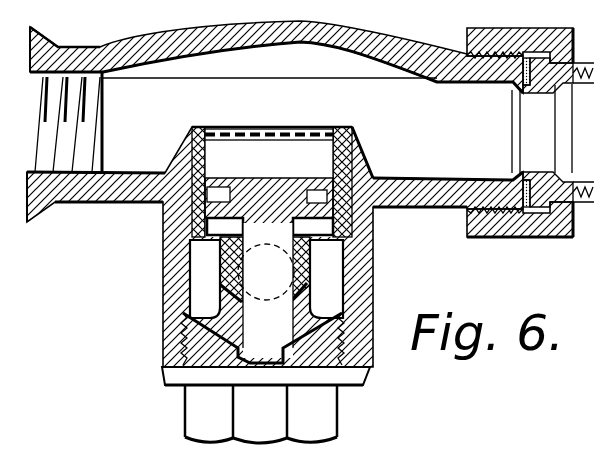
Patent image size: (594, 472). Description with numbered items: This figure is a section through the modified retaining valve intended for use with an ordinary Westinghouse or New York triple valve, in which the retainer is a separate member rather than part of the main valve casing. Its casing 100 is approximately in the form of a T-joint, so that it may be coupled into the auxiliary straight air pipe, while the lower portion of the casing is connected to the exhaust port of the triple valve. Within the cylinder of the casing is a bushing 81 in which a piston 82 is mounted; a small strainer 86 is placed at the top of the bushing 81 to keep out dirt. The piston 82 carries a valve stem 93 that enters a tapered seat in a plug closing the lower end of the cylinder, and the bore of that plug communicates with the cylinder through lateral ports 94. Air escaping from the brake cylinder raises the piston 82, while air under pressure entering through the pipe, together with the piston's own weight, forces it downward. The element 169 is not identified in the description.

The casing 100 is at (312, 69).
The bushing 81 is at (205, 220).
The strainer 86 is at (298, 133).
The piston 82 is at (303, 170).
The lateral ports 94 is at (222, 303).
The valve stem 93 is at (262, 294).
The hexagonal plug nut 169 is at (272, 471).